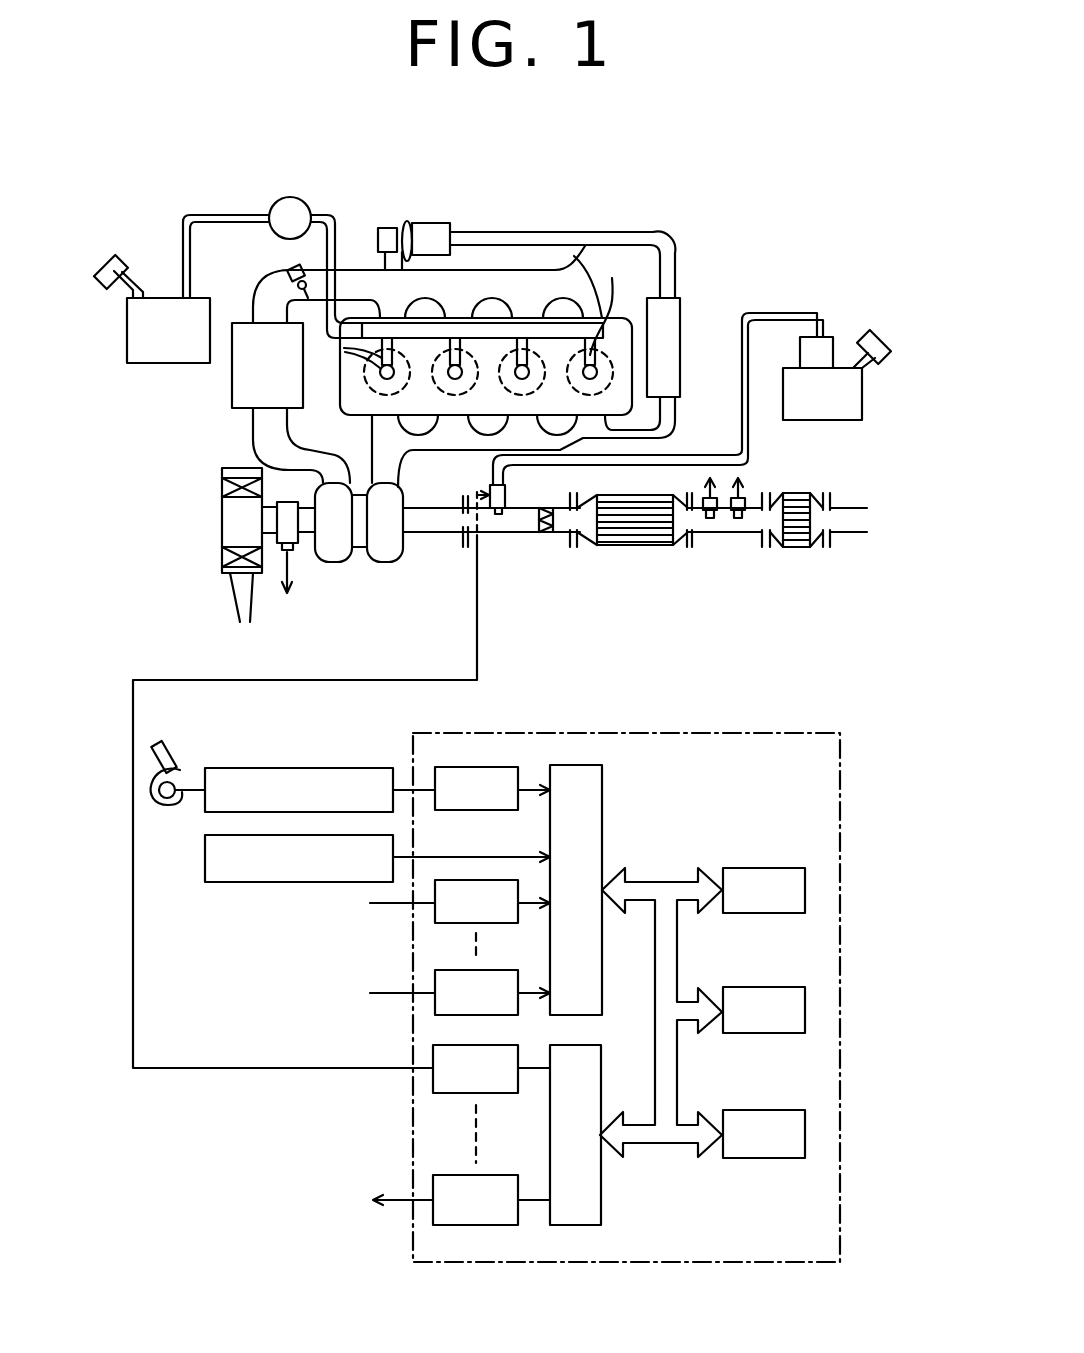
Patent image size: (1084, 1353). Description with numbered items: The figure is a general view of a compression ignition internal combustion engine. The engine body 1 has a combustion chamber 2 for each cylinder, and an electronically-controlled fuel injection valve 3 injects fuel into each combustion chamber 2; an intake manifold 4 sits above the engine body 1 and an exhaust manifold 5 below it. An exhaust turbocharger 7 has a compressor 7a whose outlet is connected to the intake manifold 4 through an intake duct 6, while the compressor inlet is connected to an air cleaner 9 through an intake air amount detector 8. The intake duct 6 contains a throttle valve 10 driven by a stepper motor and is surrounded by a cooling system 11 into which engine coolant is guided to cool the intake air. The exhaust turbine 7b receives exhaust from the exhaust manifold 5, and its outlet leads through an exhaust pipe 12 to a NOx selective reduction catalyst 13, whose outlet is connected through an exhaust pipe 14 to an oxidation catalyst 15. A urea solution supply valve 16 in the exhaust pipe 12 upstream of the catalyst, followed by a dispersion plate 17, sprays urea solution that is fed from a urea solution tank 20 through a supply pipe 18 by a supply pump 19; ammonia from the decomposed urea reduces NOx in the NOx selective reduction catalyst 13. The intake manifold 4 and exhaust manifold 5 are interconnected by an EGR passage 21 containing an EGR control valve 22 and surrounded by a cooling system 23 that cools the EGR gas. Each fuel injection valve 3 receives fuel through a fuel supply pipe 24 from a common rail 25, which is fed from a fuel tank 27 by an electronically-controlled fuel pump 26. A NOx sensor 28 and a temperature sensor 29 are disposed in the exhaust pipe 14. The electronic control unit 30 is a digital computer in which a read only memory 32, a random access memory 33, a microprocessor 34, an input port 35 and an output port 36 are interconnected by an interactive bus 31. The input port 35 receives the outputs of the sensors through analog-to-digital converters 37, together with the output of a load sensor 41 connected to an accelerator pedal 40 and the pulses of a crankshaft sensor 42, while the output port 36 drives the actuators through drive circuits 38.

The engine body 1 is at (634, 312).
The combustion chamber 2 is at (576, 384).
The fuel injection valve 3 is at (598, 377).
The intake manifold 4 is at (601, 232).
The exhaust manifold 5 is at (450, 447).
The intake duct 6 is at (258, 302).
The exhaust turbocharger 7 is at (366, 573).
The compressor 7a is at (333, 562).
The exhaust turbine 7b is at (390, 562).
The intake air amount detector 8 is at (300, 557).
The air cleaner 9 is at (235, 522).
The throttle valve 10 is at (290, 268).
The cooling system 11 is at (240, 390).
The exhaust pipe 12 is at (505, 533).
The NOx selective reduction catalyst 13 is at (632, 545).
The exhaust pipe 14 is at (722, 533).
The oxidation catalyst 15 is at (797, 547).
The urea solution supply valve 16 is at (506, 497).
The dispersion plate 17 is at (548, 533).
The supply pipe 18 is at (750, 438).
The supply pump 19 is at (828, 336).
The urea solution tank 20 is at (842, 420).
The EGR passage 21 is at (540, 232).
The EGR control valve 22 is at (393, 228).
The cooling system 23 is at (672, 347).
The fuel supply pipe 24 is at (470, 309).
The common rail 25 is at (508, 323).
The fuel pump 26 is at (278, 198).
The fuel tank 27 is at (150, 364).
The NOx sensor 28 is at (706, 496).
The temperature sensor 29 is at (739, 497).
The electronic control unit 30 is at (845, 770).
The interactive bus 31 is at (656, 882).
The read only memory 32 is at (757, 868).
The random access memory 33 is at (757, 987).
The microprocessor 34 is at (757, 1110).
The input port 35 is at (590, 765).
The output port 36 is at (601, 1195).
The analog-to-digital converter 37 is at (478, 767).
The drive circuit 38 is at (430, 1185).
The accelerator pedal 40 is at (175, 740).
The load sensor 41 is at (333, 765).
The crankshaft sensor 42 is at (257, 882).